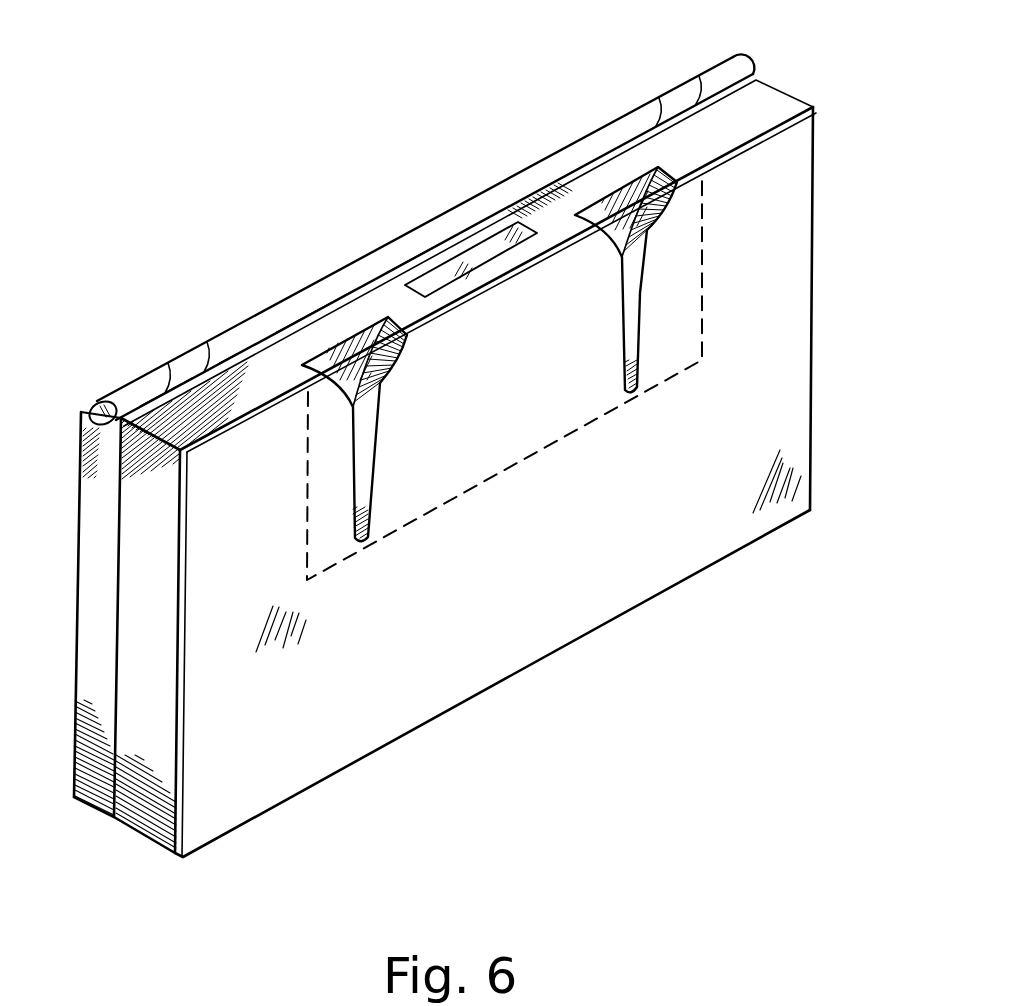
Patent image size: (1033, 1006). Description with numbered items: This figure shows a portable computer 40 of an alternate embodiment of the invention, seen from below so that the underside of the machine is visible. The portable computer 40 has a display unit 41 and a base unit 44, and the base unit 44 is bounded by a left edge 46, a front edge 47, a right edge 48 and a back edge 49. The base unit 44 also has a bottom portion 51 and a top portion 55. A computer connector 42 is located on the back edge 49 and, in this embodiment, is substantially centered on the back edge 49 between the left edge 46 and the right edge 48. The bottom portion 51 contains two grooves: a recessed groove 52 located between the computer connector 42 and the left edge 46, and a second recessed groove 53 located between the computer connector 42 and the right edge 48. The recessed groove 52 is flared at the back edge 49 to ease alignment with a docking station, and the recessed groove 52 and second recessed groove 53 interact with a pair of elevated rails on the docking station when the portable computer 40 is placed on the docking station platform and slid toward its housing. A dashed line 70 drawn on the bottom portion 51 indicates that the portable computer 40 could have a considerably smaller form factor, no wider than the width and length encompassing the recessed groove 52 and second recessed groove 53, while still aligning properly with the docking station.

The portable computer 40 is at (793, 53).
The display unit 41 is at (243, 323).
The computer connector 42 is at (425, 282).
The base unit 44 is at (195, 400).
The left edge 46 is at (813, 437).
The front edge 47 is at (340, 772).
The right edge 48 is at (162, 564).
The back edge 49 is at (256, 393).
The bottom portion 51 is at (266, 512).
The recessed groove 52 is at (632, 262).
The second recessed groove 53 is at (368, 395).
The top portion 55 is at (115, 497).
The dashed line 70 is at (330, 567).